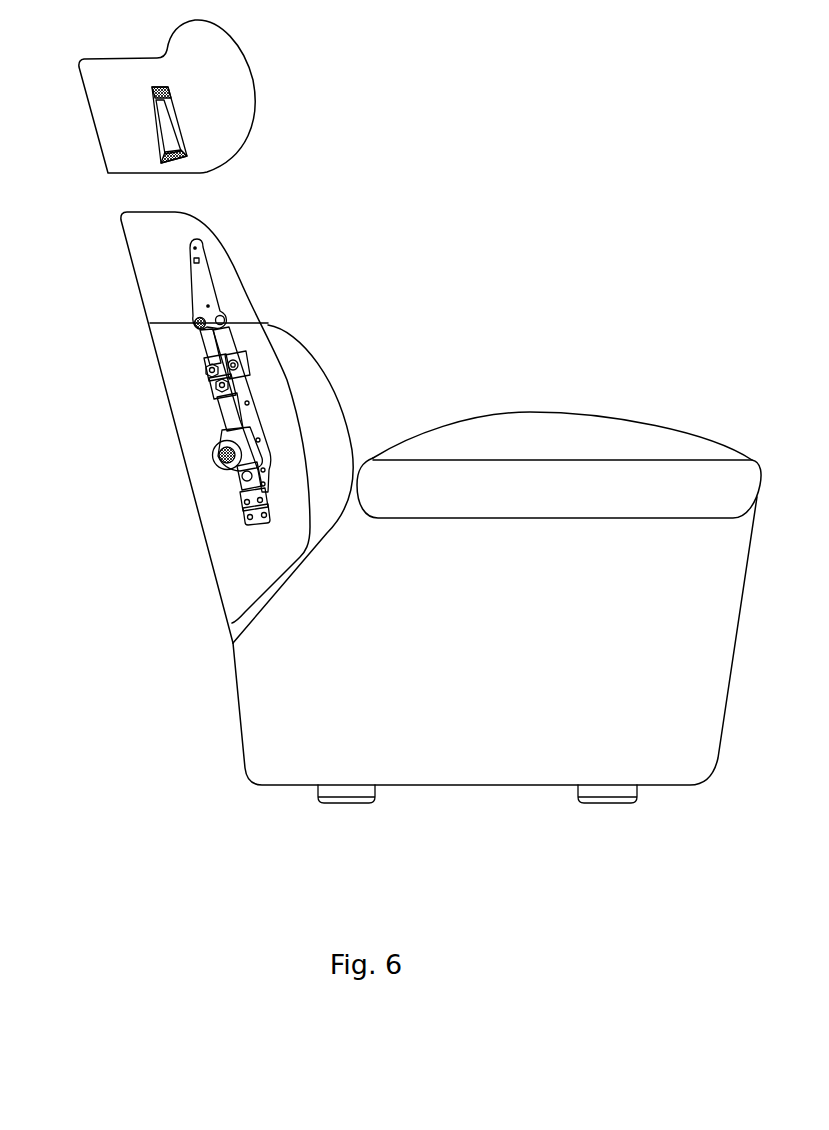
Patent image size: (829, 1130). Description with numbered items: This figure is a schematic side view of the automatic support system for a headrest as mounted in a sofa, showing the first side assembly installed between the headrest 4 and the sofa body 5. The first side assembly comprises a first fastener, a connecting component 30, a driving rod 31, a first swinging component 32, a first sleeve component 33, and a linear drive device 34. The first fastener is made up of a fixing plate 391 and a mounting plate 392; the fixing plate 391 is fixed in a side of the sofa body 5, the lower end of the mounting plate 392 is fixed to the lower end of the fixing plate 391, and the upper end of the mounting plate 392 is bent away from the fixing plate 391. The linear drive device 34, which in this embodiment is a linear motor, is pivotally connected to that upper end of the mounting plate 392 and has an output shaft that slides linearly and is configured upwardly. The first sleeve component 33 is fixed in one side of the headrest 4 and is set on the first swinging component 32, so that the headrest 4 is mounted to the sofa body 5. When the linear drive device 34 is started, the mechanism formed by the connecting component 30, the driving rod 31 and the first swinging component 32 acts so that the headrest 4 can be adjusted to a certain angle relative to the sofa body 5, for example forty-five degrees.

The headrest 4 is at (230, 75).
The first sleeve component 33 is at (160, 145).
The first swinging component 32 is at (203, 283).
The driving rod 31 is at (207, 345).
The connecting component 30 is at (208, 388).
The fixing plate 391 is at (248, 413).
The linear drive device 34 is at (213, 460).
The mounting plate 392 is at (237, 500).
The sofa body 5 is at (257, 725).